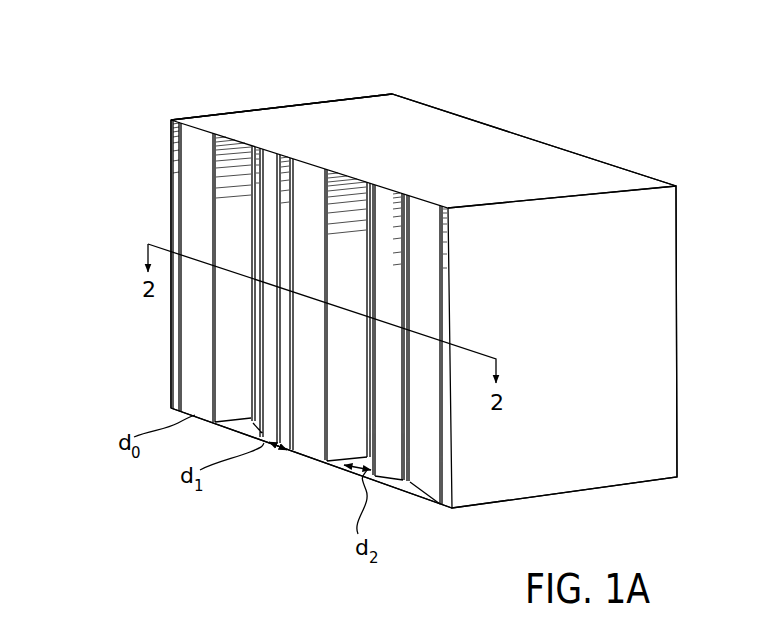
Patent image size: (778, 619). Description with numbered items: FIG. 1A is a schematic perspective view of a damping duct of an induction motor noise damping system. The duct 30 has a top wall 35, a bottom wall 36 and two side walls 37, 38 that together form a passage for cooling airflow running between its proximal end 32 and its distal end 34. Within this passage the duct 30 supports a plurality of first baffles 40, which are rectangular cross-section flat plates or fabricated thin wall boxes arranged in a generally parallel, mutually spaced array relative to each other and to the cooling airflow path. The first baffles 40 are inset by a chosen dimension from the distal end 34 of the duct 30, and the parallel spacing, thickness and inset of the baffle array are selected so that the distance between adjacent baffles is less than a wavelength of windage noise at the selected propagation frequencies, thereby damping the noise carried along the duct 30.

The duct 30 is at (125, 180).
The proximal end 32 is at (473, 123).
The distal end 34 is at (286, 446).
The top wall 35 is at (333, 138).
The bottom wall 36 is at (335, 470).
The side wall 37 is at (167, 229).
The side wall 38 is at (617, 438).
The first baffles 40 is at (195, 351).